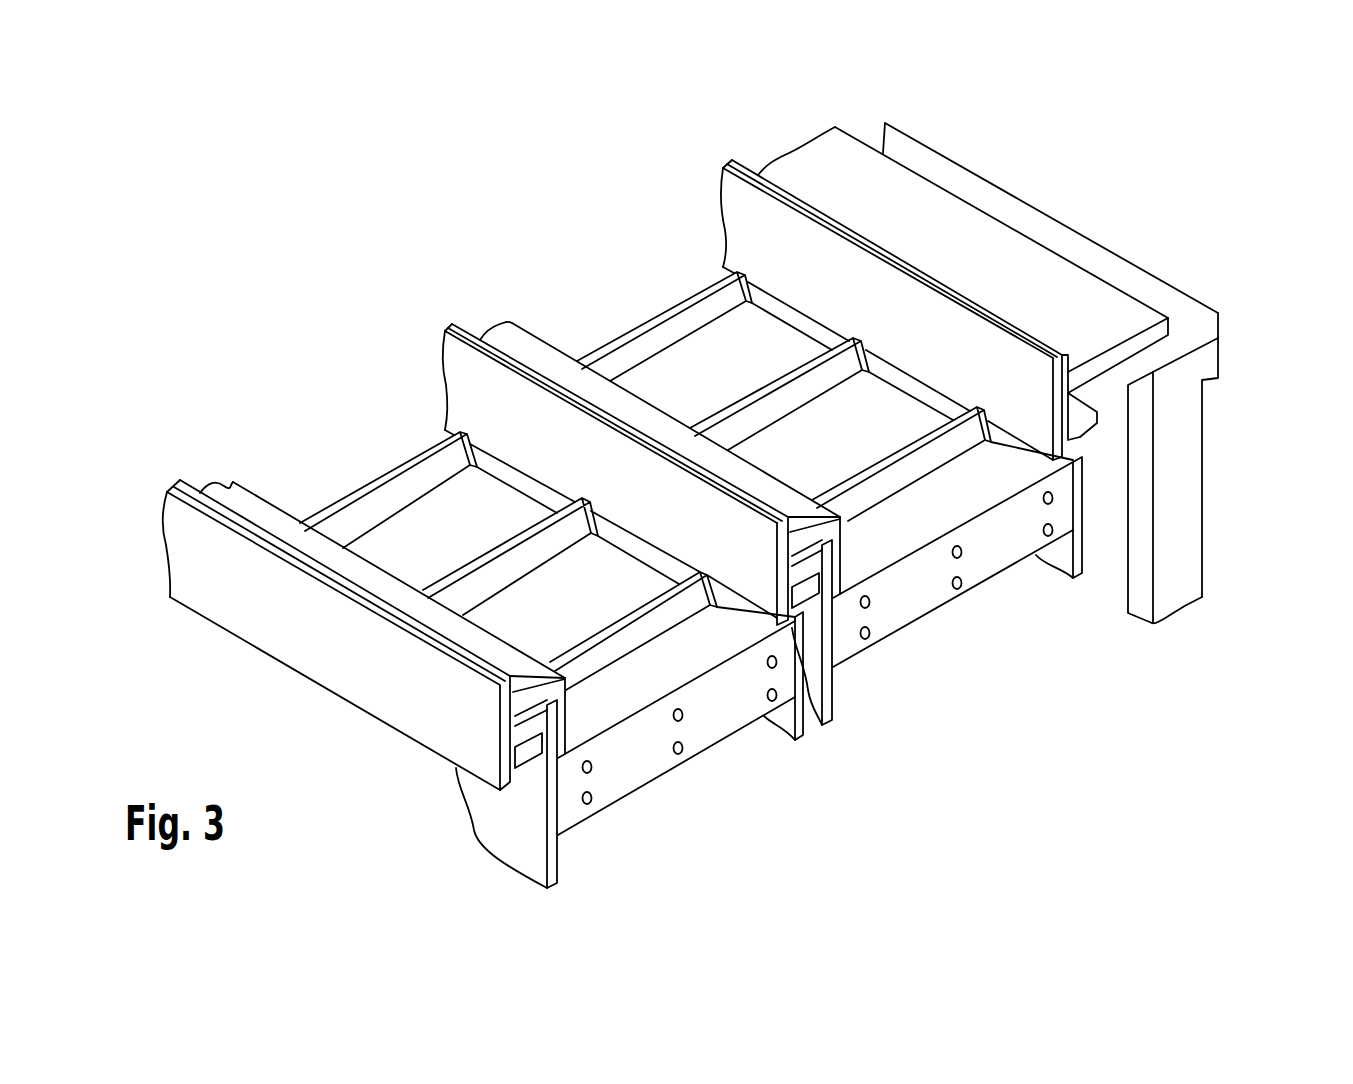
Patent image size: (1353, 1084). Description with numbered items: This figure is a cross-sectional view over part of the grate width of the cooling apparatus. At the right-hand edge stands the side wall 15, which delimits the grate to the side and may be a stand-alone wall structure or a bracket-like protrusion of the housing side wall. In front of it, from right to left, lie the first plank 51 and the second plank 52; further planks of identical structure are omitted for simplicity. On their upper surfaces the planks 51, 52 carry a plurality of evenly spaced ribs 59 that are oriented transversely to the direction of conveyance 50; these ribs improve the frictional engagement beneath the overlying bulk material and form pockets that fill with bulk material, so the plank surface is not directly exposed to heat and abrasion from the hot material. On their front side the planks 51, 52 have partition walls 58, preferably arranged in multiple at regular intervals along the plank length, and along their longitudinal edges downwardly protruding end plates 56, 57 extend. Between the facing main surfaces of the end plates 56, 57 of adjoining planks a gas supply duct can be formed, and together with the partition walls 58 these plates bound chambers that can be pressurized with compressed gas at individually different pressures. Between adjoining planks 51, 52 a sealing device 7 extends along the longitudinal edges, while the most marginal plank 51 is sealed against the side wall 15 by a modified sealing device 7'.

The direction of conveyance 50 is at (250, 435).
The second plank 52 is at (367, 445).
The sealing device 7 is at (723, 477).
The first plank 51 is at (612, 300).
The ribs 59 is at (708, 300).
The modified sealing device 7' is at (954, 258).
The side wall 15 is at (1183, 487).
The partition walls 58 is at (918, 602).
The end plate 57 is at (556, 874).
The end plate 56 is at (806, 733).